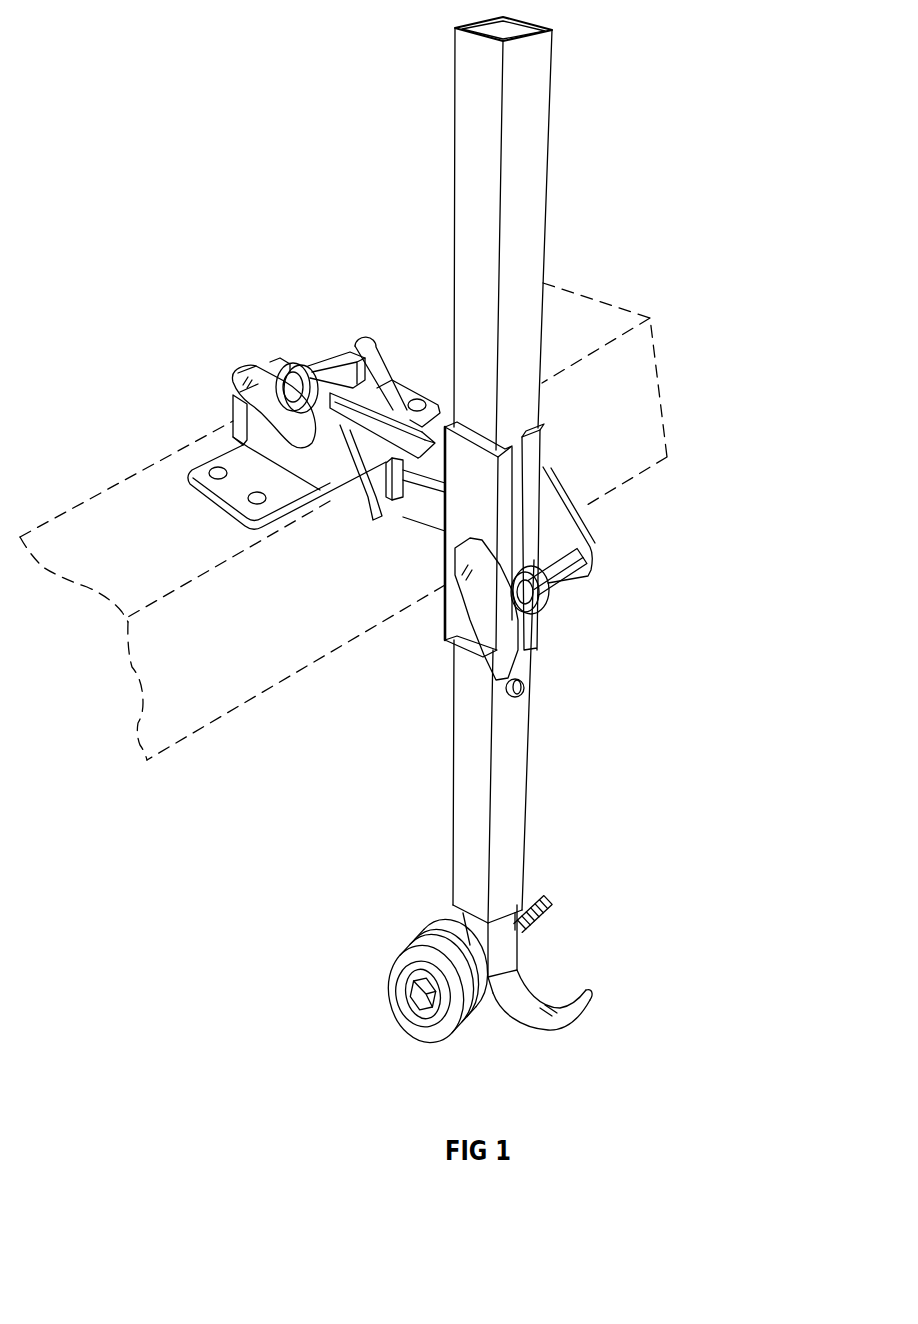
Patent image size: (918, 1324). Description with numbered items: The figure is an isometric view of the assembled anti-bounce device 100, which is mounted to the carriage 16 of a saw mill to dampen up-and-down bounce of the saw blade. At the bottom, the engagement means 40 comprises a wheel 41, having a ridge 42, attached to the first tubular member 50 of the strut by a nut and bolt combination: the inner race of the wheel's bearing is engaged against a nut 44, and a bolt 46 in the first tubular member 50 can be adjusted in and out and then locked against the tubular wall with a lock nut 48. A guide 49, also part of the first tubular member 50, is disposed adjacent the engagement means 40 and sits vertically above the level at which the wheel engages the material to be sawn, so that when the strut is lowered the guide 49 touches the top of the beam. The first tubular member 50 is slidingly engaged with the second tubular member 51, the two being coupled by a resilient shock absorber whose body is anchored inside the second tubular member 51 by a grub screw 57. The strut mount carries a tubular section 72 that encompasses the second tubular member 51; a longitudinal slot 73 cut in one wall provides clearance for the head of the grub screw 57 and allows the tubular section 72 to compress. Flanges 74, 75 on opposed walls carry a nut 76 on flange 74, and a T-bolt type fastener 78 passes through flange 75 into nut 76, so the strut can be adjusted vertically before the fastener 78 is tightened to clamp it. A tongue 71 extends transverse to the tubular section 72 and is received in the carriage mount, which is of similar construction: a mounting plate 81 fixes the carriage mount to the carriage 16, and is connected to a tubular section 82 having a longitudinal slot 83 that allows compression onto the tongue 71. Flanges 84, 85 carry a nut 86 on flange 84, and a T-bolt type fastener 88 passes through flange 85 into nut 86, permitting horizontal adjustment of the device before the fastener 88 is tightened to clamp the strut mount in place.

The anti-bounce device 100 is at (612, 232).
The carriage 16 is at (657, 350).
The second tubular member 51 is at (530, 116).
The tongue 71 is at (382, 522).
The tubular section 72 is at (517, 452).
The longitudinal slot 73 is at (535, 440).
The flange 74 is at (585, 527).
The flange 75 is at (410, 520).
The nut 76 is at (565, 580).
The fastener 78 is at (476, 617).
The grub screw 57 is at (522, 697).
The mounting plate 81 is at (203, 497).
The tubular section 82 is at (380, 492).
The longitudinal slot 83 is at (323, 497).
The flange 84 is at (370, 383).
The flange 85 is at (270, 440).
The nut 86 is at (320, 366).
The fastener 88 is at (226, 373).
The engagement means 40 is at (368, 946).
The wheel 41 is at (425, 1022).
The ridge 42 is at (486, 1035).
The nut 44 is at (478, 923).
The bolt 46 is at (410, 1003).
The lock nut 48 is at (520, 940).
The guide 49 is at (538, 1028).
The first tubular member 50 is at (523, 948).